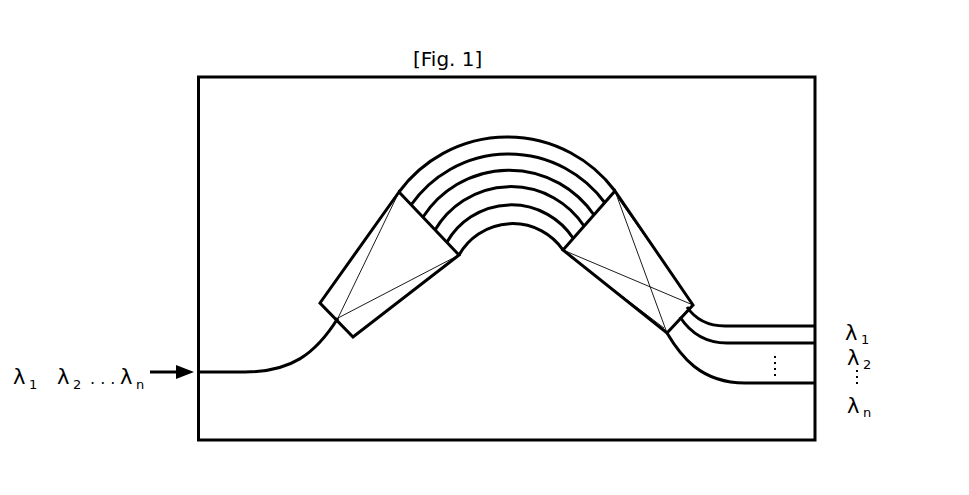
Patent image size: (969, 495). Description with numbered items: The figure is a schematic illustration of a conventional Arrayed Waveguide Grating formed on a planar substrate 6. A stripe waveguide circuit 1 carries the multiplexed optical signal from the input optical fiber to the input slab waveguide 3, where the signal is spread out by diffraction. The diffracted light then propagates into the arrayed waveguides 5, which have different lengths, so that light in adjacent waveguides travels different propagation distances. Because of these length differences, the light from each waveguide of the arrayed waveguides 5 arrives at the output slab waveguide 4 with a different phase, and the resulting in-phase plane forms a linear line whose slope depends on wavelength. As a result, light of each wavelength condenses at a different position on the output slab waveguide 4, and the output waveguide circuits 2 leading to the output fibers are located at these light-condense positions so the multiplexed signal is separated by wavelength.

The stripe waveguide circuit 1 is at (290, 363).
The output waveguide circuits 2 is at (777, 325).
The input slab waveguide 3 is at (380, 265).
The output slab waveguide 4 is at (637, 245).
The arrayed waveguides 5 is at (512, 225).
The planar substrate 6 is at (217, 127).